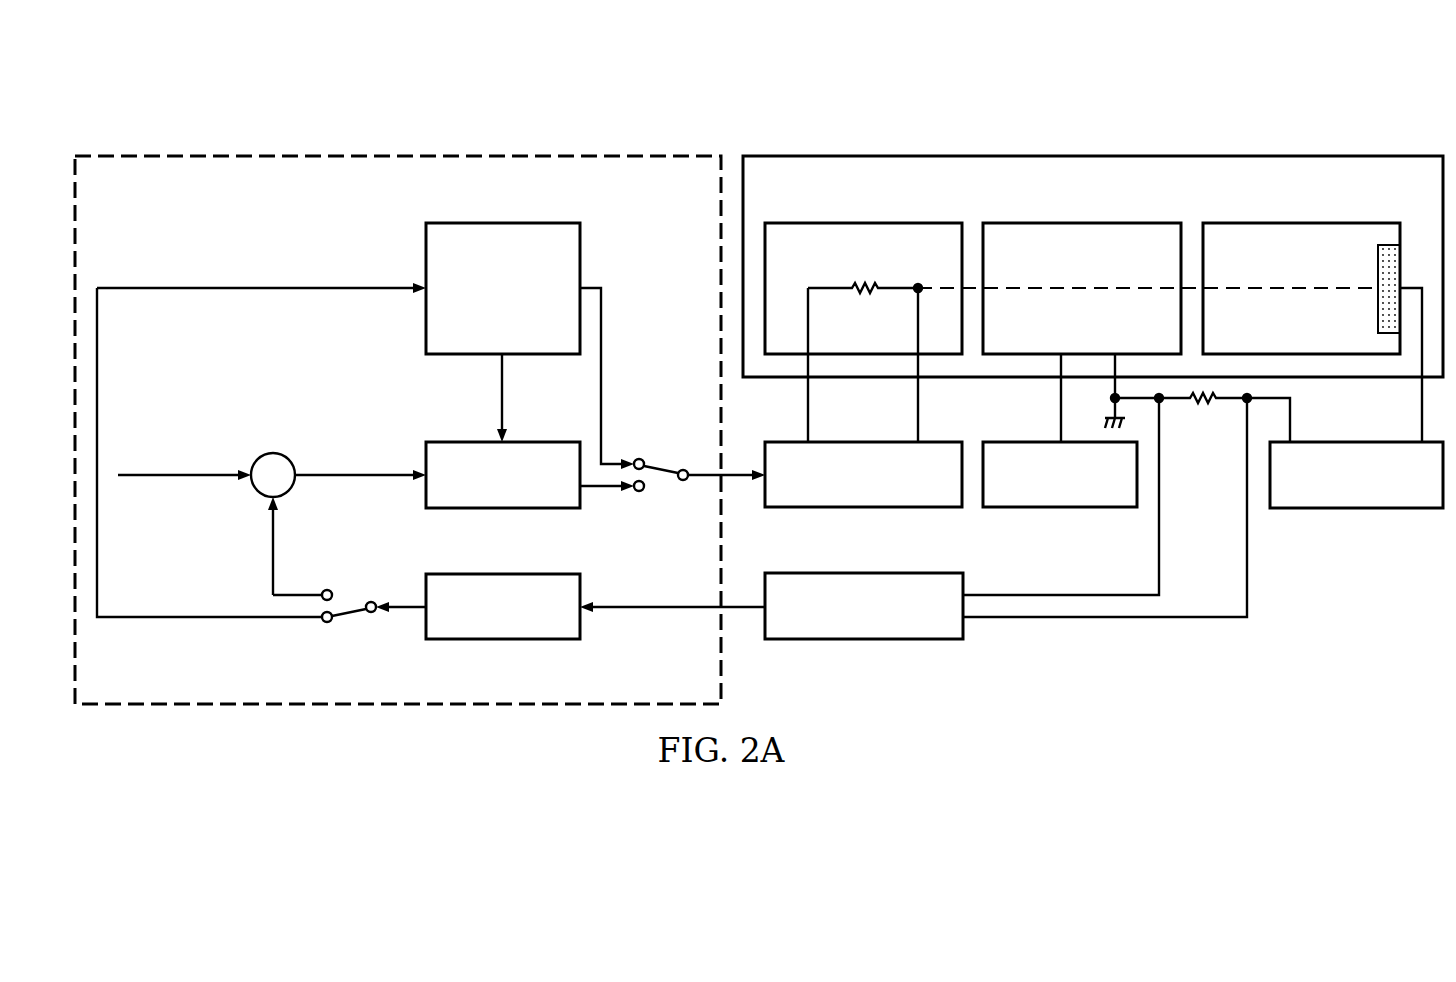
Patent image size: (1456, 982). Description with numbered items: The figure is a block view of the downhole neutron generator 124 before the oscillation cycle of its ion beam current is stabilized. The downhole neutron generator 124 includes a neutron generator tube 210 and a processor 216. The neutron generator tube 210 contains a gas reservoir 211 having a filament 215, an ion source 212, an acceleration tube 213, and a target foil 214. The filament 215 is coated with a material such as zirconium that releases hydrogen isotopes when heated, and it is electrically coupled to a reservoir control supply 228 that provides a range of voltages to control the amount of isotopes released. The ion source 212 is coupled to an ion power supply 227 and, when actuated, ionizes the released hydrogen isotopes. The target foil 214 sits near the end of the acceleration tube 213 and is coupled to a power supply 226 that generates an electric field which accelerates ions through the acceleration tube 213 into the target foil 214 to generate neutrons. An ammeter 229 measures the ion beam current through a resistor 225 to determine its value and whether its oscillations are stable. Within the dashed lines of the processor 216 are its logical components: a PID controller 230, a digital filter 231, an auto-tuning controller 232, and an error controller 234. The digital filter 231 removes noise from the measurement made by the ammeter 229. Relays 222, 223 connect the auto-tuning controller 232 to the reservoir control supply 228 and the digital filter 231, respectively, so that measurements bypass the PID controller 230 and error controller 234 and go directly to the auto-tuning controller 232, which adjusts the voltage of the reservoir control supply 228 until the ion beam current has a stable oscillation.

The downhole neutron generator 124 is at (1101, 63).
The neutron generator tube 210 is at (1176, 148).
The gas reservoir 211 is at (874, 221).
The ion source 212 is at (1092, 221).
The acceleration tube 213 is at (1311, 221).
The target foil 214 is at (1376, 266).
The filament 215 is at (877, 283).
The processor 216 is at (291, 150).
The relay 222 is at (665, 466).
The relay 223 is at (350, 614).
The resistor 225 is at (1208, 410).
The power supply 226 is at (1357, 510).
The ion power supply 227 is at (1093, 509).
The reservoir control supply 228 is at (865, 509).
The ammeter 229 is at (868, 641).
The PID controller 230 is at (470, 510).
The digital filter 231 is at (503, 641).
The auto-tuning controller 232 is at (467, 221).
The error controller 234 is at (266, 456).